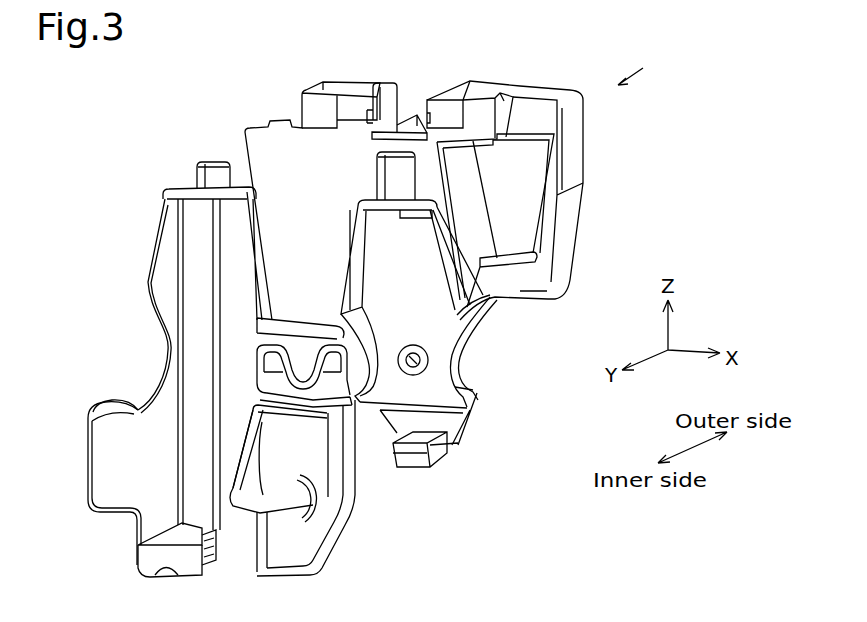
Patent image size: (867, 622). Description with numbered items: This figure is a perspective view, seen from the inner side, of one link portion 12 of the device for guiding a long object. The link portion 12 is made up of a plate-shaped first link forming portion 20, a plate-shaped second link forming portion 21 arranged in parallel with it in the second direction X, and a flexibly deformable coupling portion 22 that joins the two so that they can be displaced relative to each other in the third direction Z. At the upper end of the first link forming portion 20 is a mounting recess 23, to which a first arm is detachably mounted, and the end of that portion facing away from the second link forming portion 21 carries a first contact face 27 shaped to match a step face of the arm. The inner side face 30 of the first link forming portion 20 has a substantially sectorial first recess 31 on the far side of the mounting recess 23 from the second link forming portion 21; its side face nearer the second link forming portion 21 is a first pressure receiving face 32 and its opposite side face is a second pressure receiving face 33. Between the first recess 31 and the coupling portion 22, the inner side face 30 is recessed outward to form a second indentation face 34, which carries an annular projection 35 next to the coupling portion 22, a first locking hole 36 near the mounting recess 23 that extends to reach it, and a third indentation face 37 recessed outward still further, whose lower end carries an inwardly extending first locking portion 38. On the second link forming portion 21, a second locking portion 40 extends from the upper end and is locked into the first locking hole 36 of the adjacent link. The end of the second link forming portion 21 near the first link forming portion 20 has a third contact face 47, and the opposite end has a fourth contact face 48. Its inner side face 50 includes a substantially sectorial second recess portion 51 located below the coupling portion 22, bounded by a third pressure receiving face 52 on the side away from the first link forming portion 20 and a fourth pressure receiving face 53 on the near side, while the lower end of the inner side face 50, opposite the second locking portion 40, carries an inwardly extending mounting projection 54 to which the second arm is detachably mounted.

The link portion 12 is at (645, 67).
The first link forming portion 20 is at (500, 83).
The second link forming portion 21 is at (150, 298).
The coupling portion 22 is at (306, 366).
The mounting recess 23 is at (397, 97).
The first contact face 27 is at (577, 150).
The inner side face 30 is at (263, 143).
The first recess 31 is at (527, 150).
The first pressure receiving face 32 is at (470, 193).
The second pressure receiving face 33 is at (530, 226).
The second indentation face 34 is at (435, 330).
The annular projection 35 is at (430, 360).
The first locking hole 36 is at (402, 212).
The third indentation face 37 is at (445, 420).
The first locking portion 38 is at (413, 465).
The second locking portion 40 is at (213, 160).
The third contact face 47 is at (343, 525).
The fourth contact face 48 is at (88, 458).
The inner side face 50 is at (118, 430).
The second recess portion 51 is at (237, 462).
The third pressure receiving face 52 is at (280, 460).
The fourth pressure receiving face 53 is at (303, 503).
The mounting projection 54 is at (140, 566).